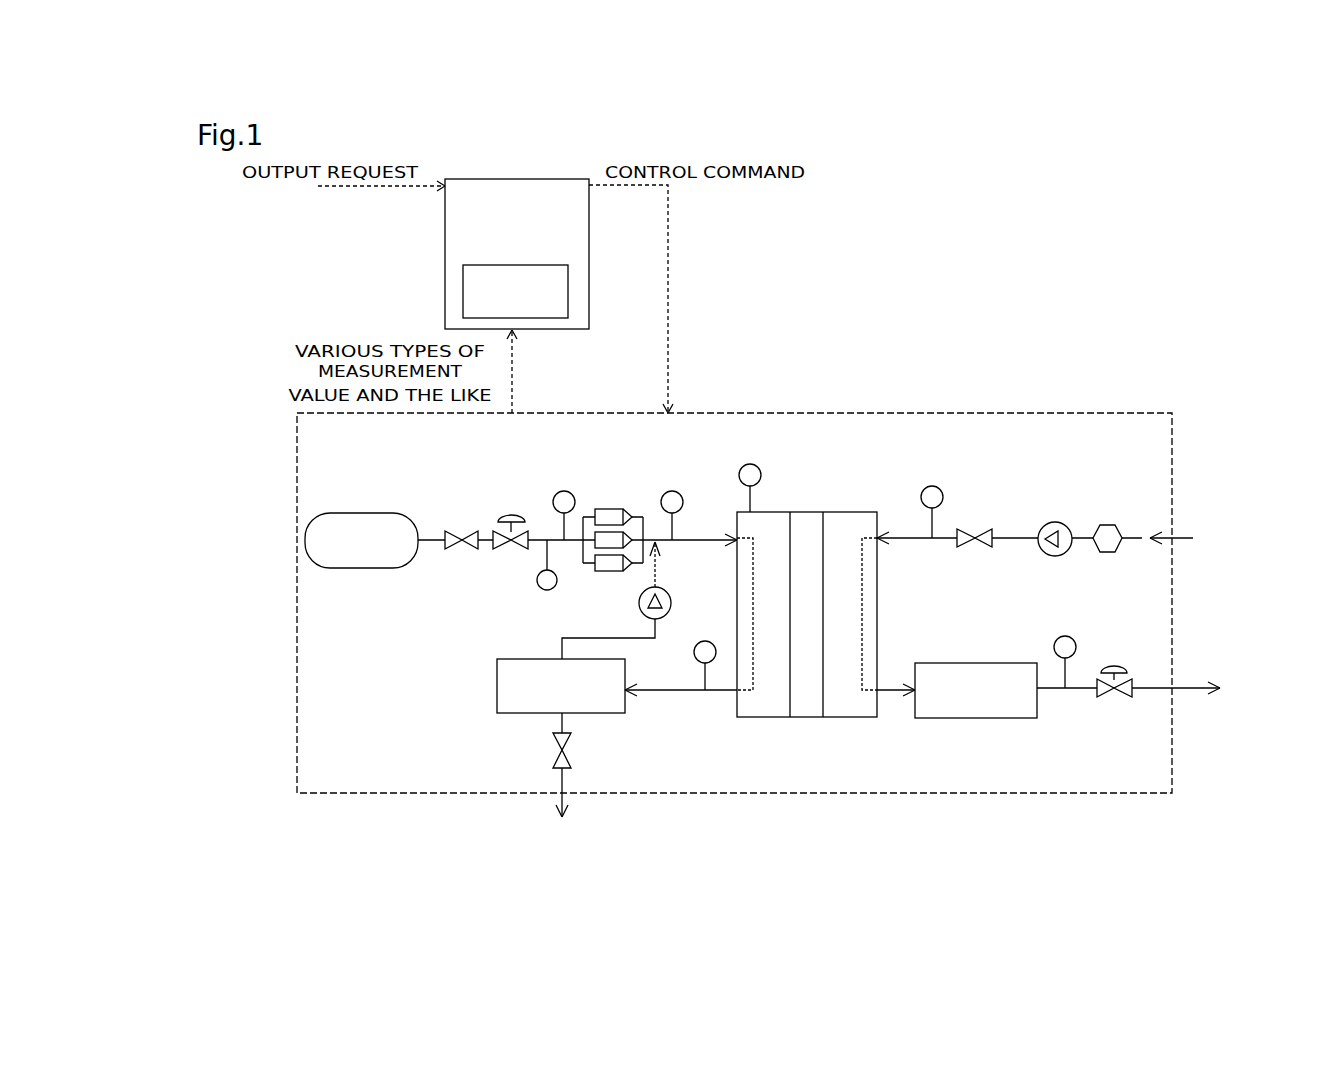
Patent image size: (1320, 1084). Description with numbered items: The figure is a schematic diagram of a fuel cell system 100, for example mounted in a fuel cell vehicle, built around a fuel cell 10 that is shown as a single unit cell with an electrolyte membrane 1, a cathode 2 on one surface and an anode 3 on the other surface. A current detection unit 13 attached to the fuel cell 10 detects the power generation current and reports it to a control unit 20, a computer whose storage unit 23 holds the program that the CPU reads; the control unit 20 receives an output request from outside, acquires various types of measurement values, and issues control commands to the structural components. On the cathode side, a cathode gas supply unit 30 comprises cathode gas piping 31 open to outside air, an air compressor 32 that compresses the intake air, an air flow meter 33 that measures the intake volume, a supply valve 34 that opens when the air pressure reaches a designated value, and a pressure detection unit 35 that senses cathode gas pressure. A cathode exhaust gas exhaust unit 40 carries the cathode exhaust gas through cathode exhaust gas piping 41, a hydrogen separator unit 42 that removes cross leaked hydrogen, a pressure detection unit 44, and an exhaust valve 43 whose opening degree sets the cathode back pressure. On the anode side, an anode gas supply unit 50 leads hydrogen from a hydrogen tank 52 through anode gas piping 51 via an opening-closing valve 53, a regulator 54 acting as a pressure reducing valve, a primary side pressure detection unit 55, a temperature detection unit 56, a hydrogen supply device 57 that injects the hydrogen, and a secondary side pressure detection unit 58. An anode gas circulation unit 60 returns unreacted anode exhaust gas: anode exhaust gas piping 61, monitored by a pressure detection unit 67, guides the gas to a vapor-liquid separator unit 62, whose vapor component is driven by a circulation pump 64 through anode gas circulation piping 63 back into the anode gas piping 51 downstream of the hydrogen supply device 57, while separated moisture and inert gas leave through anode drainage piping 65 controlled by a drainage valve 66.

The electrolyte membrane 1 is at (807, 520).
The cathode 2 is at (837, 520).
The anode 3 is at (775, 520).
The fuel cell 10 is at (807, 571).
The current detection unit 13 is at (758, 465).
The control unit 20 is at (517, 243).
The storage unit 23 is at (535, 266).
The cathode gas supply unit 30 is at (1060, 482).
The cathode gas piping 31 is at (1007, 537).
The air compressor 32 is at (1057, 522).
The air flow meter 33 is at (1113, 523).
The supply valve 34 is at (963, 528).
The pressure detection unit 35 is at (938, 485).
The cathode exhaust gas exhaust unit 40 is at (1042, 748).
The cathode exhaust gas piping 41 is at (1177, 685).
The hydrogen separator unit 42 is at (950, 661).
The exhaust valve 43 is at (1113, 662).
The pressure detection unit 44 is at (1072, 633).
The anode gas supply unit 50 is at (413, 462).
The anode gas piping 51 is at (662, 537).
The hydrogen tank 52 is at (372, 512).
The opening-closing valve 53 is at (473, 530).
The regulator 54 is at (513, 512).
The primary side pressure detection unit 55 is at (538, 589).
The temperature detection unit 56 is at (557, 490).
The hydrogen supply device 57 is at (612, 507).
The secondary side pressure detection unit 58 is at (683, 491).
The anode gas circulation unit 60 is at (483, 672).
The anode exhaust gas piping 61 is at (660, 694).
The vapor-liquid separator unit 62 is at (540, 658).
The anode gas circulation piping 63 is at (612, 638).
The circulation pump 64 is at (640, 602).
The anode drainage piping 65 is at (558, 775).
The drainage valve 66 is at (558, 753).
The pressure detection unit 67 is at (708, 640).
The fuel cell system 100 is at (1075, 373).